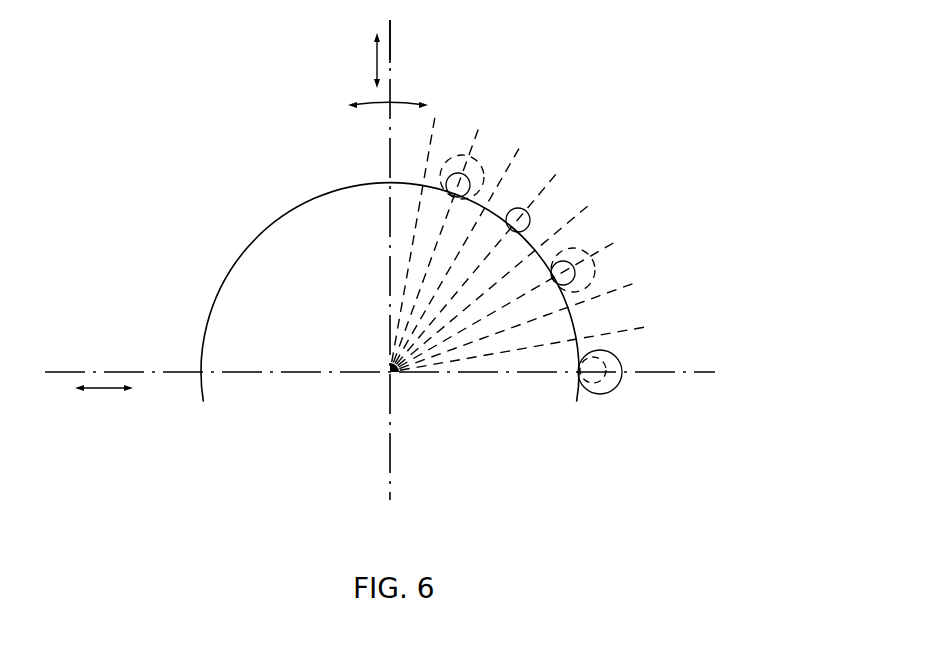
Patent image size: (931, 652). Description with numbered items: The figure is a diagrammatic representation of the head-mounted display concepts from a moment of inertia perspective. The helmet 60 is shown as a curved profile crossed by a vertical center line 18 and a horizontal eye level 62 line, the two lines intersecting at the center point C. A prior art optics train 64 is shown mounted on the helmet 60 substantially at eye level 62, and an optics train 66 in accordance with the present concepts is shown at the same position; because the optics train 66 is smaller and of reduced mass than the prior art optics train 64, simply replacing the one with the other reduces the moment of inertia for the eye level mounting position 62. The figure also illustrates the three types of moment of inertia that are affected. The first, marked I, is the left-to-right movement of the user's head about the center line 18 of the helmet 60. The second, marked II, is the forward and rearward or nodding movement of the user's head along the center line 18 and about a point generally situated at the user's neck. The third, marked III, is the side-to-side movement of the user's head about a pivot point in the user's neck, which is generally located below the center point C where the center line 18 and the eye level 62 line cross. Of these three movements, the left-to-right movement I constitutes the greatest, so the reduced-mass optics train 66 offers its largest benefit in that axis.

The center line 18 is at (391, 49).
The helmet 60 is at (232, 268).
The eye level 62 is at (660, 373).
The prior art optics train 64 is at (576, 249).
The optics train 66 is at (530, 222).
The center point C is at (388, 374).
The first moment of inertia I is at (99, 390).
The second moment of inertia II is at (374, 58).
The third moment of inertia III is at (405, 103).